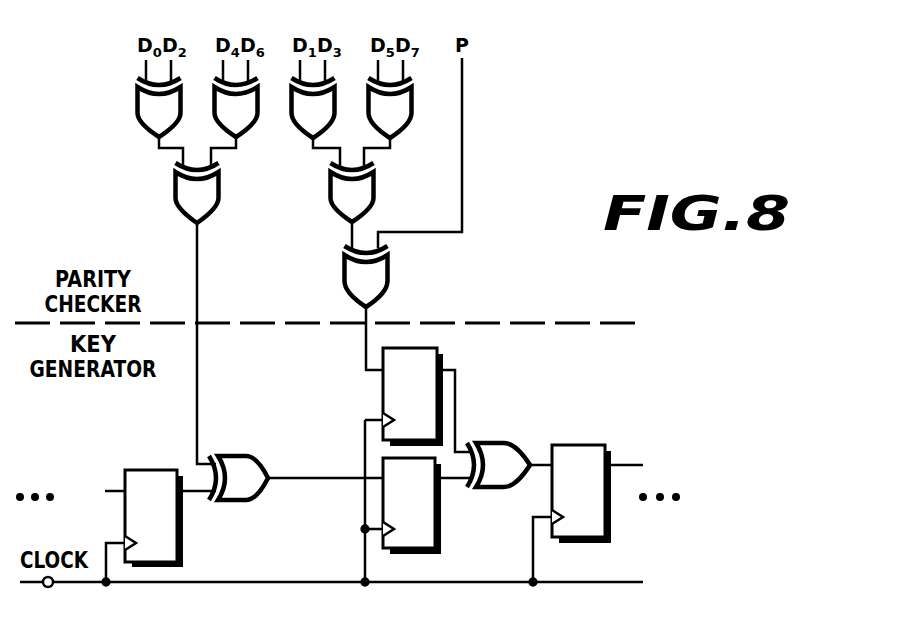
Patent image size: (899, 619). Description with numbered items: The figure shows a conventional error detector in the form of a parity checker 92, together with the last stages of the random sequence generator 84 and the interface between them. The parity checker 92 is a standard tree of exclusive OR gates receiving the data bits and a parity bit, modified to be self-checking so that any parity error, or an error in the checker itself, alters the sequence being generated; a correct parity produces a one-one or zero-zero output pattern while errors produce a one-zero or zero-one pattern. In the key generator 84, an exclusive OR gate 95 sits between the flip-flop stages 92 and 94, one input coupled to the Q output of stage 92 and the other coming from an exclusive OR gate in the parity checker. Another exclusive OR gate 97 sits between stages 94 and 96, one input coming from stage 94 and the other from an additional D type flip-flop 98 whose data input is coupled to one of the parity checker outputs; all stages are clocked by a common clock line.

The sequence generator 84 is at (120, 429).
The parity checker 92 is at (150, 211).
The flip-flop stage 94 is at (442, 529).
The exclusive OR gate 95 is at (231, 503).
The flip-flop stage 96 is at (578, 445).
The exclusive OR gate 97 is at (503, 489).
The D type flip-flop 98 is at (438, 351).